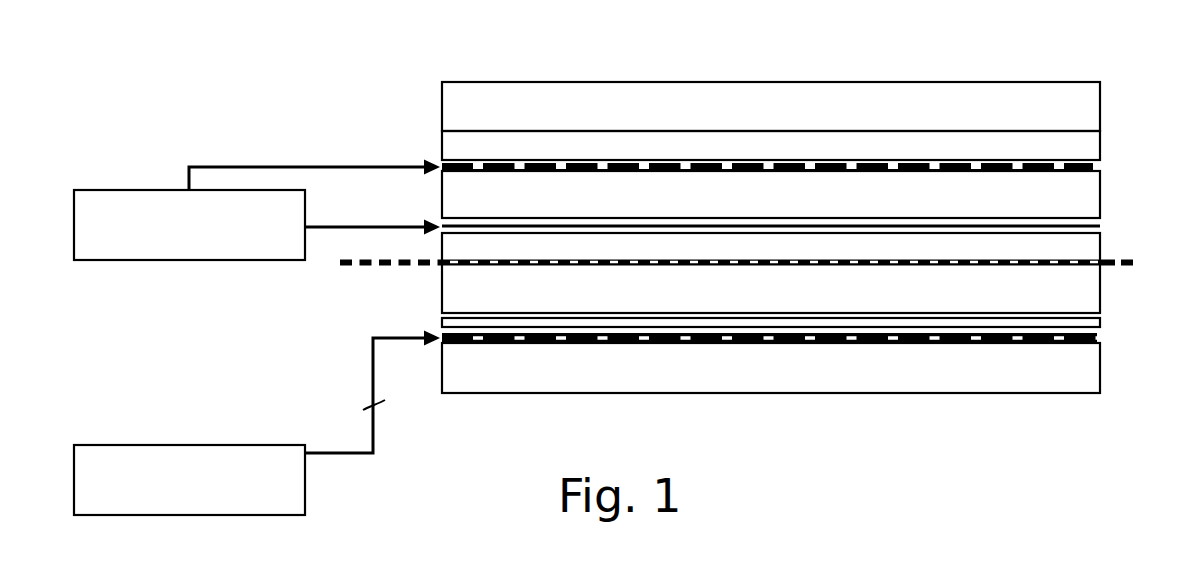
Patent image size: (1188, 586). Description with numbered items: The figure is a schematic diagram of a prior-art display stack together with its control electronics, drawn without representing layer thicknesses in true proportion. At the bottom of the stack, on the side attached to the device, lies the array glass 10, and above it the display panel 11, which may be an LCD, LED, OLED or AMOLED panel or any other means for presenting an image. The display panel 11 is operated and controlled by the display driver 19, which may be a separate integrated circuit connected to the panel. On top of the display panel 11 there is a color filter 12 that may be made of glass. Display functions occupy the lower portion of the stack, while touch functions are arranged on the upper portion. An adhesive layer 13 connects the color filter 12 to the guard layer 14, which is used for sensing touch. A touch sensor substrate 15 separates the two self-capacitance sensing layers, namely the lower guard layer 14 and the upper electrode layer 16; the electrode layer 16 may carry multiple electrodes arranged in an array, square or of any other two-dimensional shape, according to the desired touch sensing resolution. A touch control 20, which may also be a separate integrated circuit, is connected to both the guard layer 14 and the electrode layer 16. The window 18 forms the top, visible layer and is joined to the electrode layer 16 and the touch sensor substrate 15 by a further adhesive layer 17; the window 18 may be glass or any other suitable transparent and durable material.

The array glass 10 is at (1100, 370).
The display panel 11 is at (1097, 336).
The color filter 12 is at (1100, 295).
The adhesive layer 13 is at (1100, 247).
The guard layer 14 is at (1100, 225).
The touch sensor substrate 15 is at (1100, 190).
The electrode layer 16 is at (1093, 165).
The adhesive layer 17 is at (1100, 137).
The window 18 is at (1090, 82).
The display driver 19 is at (180, 445).
The touch control 20 is at (196, 260).